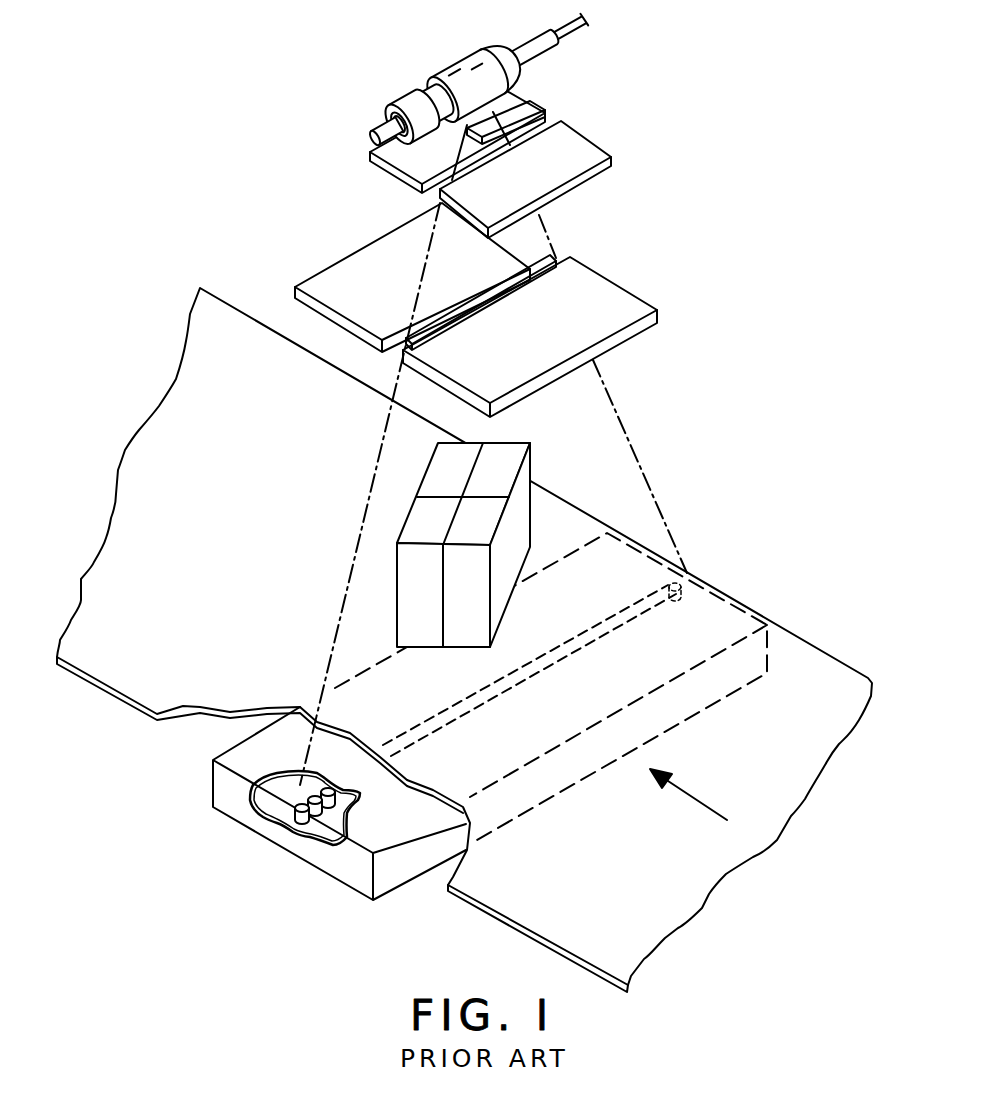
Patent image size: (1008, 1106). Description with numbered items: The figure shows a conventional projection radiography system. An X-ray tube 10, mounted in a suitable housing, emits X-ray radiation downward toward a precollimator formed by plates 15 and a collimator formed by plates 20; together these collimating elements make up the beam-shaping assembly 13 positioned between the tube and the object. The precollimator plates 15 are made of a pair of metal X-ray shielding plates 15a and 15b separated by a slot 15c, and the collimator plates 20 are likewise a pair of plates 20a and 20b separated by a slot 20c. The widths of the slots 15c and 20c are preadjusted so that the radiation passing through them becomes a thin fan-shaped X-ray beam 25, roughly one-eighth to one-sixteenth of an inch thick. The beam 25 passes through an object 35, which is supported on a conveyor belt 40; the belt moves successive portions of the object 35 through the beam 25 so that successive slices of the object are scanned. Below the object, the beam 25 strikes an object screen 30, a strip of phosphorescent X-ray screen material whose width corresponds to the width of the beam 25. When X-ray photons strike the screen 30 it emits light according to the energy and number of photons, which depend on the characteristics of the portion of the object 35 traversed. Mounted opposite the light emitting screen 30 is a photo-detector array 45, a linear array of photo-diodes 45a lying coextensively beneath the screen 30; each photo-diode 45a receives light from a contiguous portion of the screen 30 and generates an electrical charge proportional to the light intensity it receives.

The X-ray tube 10 is at (457, 72).
The optical filter assembly 13 is at (335, 228).
The precollimator plates 15 is at (497, 151).
The precollimator plate 15a is at (582, 148).
The precollimator plate 15b is at (402, 160).
The slot 15c is at (547, 120).
The collimator plates 20 is at (491, 306).
The collimator plate 20a is at (627, 303).
The collimator plate 20b is at (330, 287).
The slot 20c is at (555, 258).
The fan-shaped X-ray beam 25 is at (640, 417).
The object screen 30 is at (367, 767).
The object 35 is at (510, 460).
The conveyor belt 40 is at (807, 657).
The photo-detector array 45 is at (328, 832).
The photo-diodes 45a is at (302, 822).